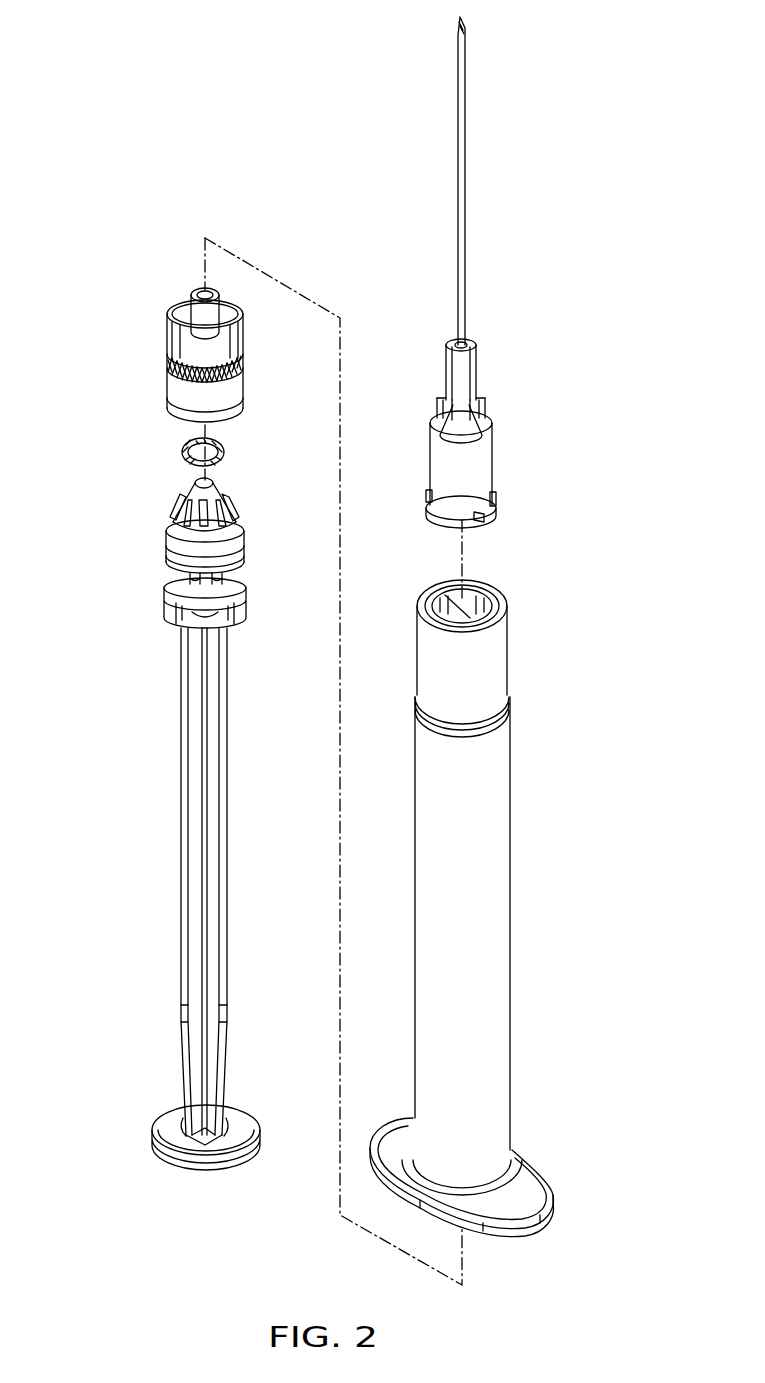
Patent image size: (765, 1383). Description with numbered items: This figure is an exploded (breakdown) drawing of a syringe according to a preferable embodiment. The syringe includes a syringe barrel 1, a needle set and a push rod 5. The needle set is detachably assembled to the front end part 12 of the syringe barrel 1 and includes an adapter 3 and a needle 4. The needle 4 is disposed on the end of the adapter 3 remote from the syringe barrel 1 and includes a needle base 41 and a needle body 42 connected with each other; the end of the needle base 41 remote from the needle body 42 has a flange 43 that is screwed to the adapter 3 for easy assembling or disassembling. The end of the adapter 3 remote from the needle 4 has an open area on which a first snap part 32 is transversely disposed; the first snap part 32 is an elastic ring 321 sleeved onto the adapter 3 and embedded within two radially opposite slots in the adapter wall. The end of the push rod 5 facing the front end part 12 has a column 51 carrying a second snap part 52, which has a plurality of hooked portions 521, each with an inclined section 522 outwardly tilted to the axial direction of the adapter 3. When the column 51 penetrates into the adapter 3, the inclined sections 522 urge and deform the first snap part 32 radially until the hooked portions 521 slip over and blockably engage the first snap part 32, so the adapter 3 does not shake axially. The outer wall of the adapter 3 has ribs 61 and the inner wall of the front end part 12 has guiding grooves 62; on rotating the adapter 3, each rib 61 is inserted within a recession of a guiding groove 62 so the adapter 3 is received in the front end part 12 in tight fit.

The syringe barrel 1 is at (497, 803).
The front end part 12 is at (480, 585).
The adapter 3 is at (168, 330).
The first snap part 32 is at (222, 445).
The elastic ring 321 is at (225, 462).
The needle 4 is at (603, 310).
The needle base 41 is at (483, 450).
The needle body 42 is at (463, 275).
The flange 43 is at (500, 520).
The push rod 5 is at (190, 850).
The column 51 is at (203, 535).
The second snap part 52 is at (158, 487).
The hooked portion 521 is at (180, 522).
The inclined section 522 is at (182, 509).
The rib 61 is at (232, 348).
The guiding groove 62 is at (485, 612).